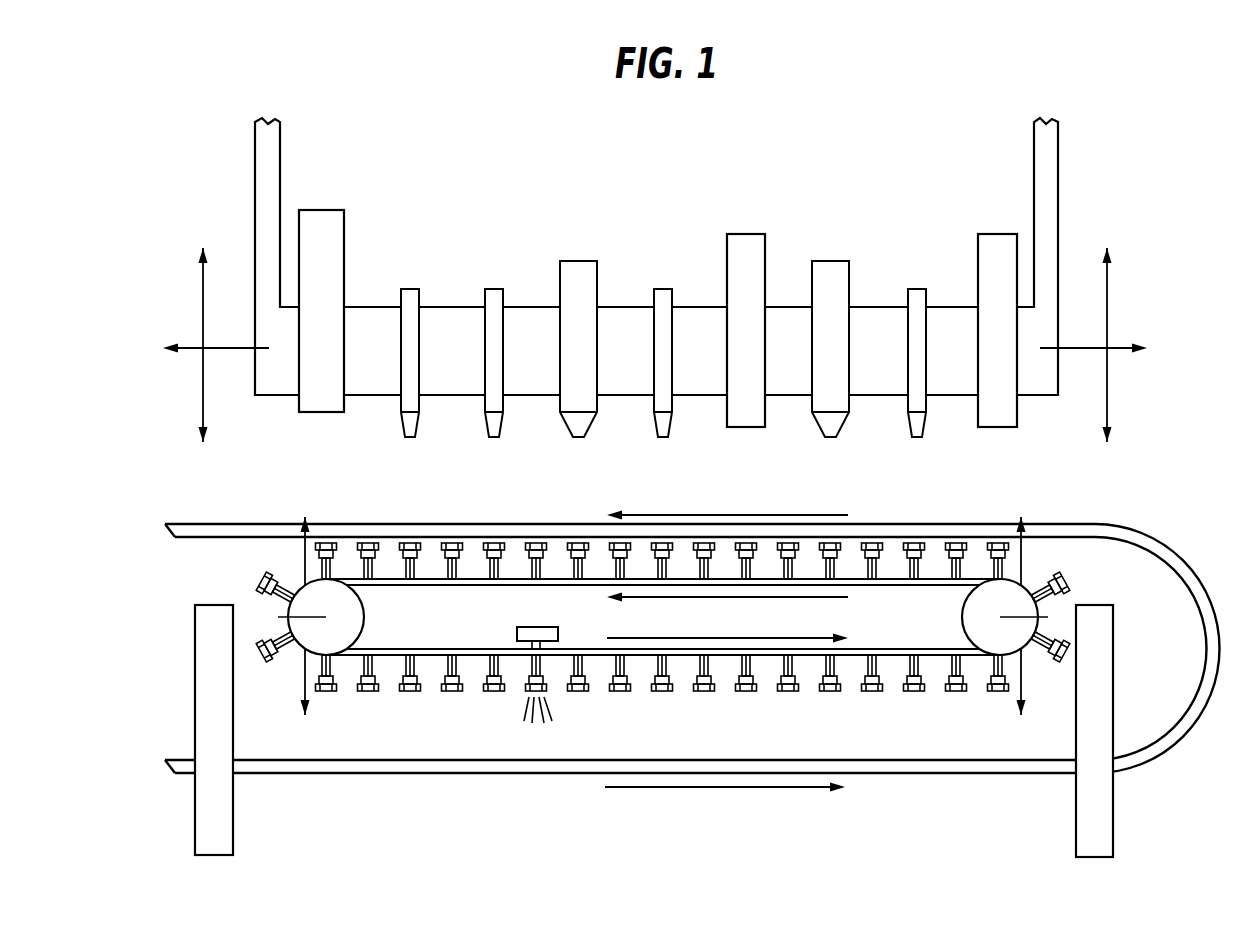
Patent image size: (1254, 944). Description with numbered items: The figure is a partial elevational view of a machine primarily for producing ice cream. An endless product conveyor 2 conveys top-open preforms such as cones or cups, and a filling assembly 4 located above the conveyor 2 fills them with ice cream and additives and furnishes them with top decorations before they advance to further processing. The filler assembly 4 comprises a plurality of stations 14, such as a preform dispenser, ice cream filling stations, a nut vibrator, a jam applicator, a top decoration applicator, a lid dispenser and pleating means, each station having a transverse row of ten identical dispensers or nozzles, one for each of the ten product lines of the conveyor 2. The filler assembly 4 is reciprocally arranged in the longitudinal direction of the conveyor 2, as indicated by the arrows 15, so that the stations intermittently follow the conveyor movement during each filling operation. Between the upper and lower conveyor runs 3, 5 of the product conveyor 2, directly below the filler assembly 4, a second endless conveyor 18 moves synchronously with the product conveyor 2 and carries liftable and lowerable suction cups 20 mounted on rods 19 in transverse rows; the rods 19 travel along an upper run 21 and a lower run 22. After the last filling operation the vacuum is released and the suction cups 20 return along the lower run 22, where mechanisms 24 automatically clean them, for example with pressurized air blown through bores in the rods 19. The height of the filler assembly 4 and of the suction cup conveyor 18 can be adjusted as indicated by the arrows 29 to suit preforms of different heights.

The endless conveyor 2 is at (1170, 545).
The upper conveyor run 3 is at (773, 517).
The filling assembly 4 is at (1068, 206).
The lower conveyor run 5 is at (648, 789).
The stations 14 is at (302, 197).
The arrows 15 is at (193, 348).
The second endless conveyor 18 is at (436, 578).
The rods 19 is at (878, 567).
The suction cups 20 is at (960, 542).
The upper run 21 is at (633, 596).
The lower run 22 is at (623, 634).
The mechanisms 24 is at (530, 635).
The arrows 29 is at (203, 280).